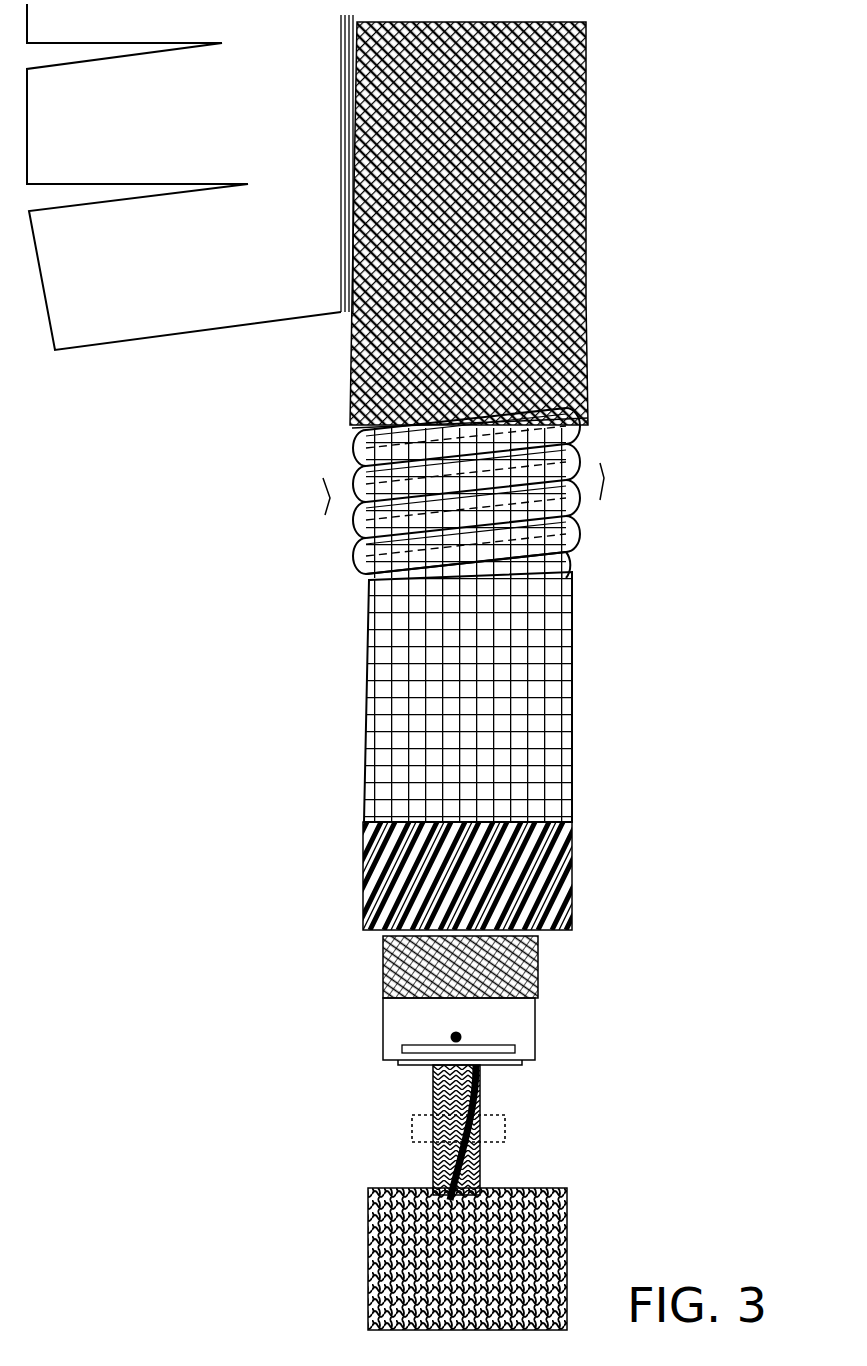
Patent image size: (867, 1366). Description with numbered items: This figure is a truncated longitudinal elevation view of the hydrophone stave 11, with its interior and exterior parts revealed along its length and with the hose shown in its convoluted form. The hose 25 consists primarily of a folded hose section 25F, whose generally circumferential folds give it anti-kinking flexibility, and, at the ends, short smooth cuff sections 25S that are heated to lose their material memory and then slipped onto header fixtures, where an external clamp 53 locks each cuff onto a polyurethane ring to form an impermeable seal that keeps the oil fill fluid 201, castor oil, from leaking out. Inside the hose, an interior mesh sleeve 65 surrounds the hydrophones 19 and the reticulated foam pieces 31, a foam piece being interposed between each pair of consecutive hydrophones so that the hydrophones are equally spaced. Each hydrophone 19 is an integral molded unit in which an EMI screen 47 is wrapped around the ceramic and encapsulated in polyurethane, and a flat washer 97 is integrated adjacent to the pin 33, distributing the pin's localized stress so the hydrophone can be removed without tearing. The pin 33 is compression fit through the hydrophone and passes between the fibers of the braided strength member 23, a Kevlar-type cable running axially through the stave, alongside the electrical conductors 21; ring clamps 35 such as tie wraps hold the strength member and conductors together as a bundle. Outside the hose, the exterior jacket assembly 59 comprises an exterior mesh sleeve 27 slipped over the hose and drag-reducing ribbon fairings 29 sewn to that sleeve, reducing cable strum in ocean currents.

The hydrophone stave 11 is at (205, 928).
The hydrophone 19 is at (480, 1000).
The electrical conductors 21 is at (480, 1073).
The braided strength member 23 is at (433, 1073).
The hose 25 is at (492, 615).
The folded hose section 25F is at (580, 540).
The smooth cuff section 25S is at (575, 648).
The exterior mesh sleeve 27 is at (587, 132).
The ribbon fairing 29 is at (177, 337).
The reticulated foam piece 31 is at (565, 1252).
The pin 33 is at (463, 1036).
The ring clamp 35 is at (505, 1122).
The EMI screen 47 is at (383, 955).
The external clamp 53 is at (328, 510).
The exterior jacket assembly 59 is at (414, 215).
The interior mesh sleeve 65 is at (572, 862).
The flat washer 97 is at (410, 1043).
The oil fill fluid 201 is at (358, 553).